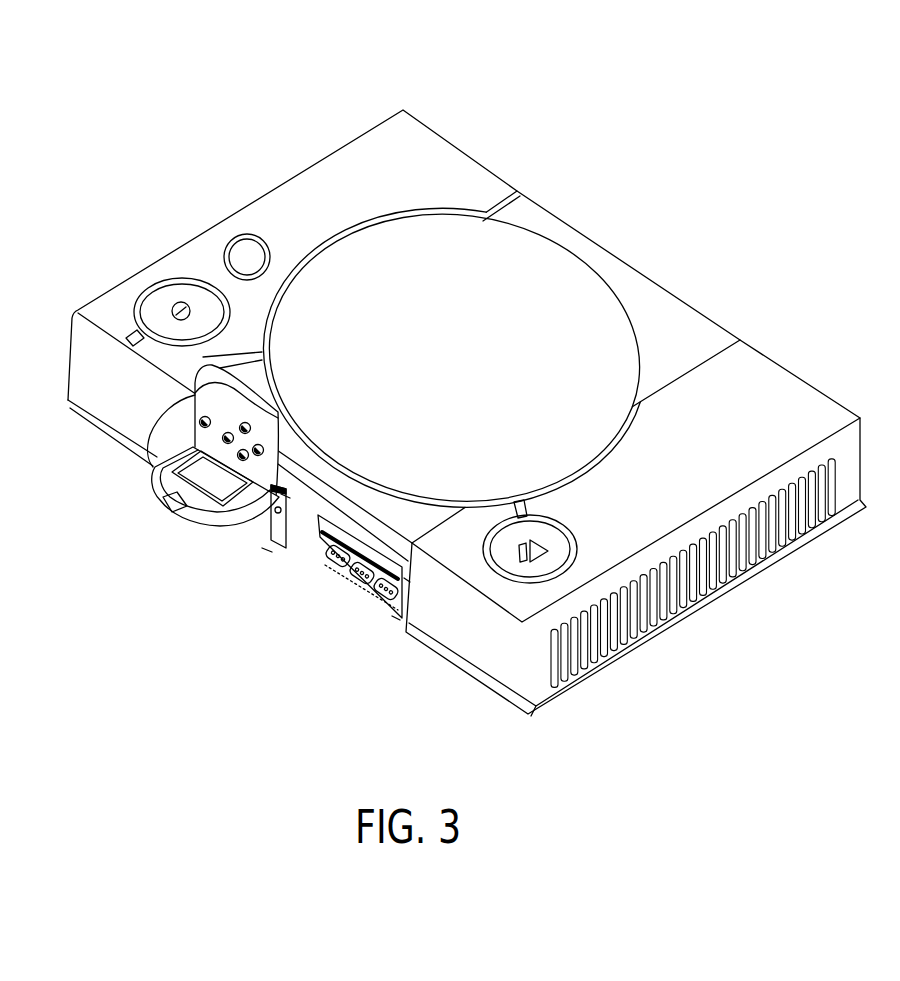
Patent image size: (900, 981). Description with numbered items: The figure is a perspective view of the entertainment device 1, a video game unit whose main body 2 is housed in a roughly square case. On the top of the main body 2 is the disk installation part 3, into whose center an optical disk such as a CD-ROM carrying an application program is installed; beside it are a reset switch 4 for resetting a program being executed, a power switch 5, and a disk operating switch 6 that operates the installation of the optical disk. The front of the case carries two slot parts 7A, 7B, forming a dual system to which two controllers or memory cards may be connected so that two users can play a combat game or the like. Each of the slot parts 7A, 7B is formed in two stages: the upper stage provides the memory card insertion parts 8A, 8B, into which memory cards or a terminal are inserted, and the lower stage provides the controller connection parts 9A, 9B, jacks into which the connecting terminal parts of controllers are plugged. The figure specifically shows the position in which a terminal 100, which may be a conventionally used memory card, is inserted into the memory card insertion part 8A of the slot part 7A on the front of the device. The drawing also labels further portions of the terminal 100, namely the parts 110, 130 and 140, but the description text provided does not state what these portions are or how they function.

The entertainment device 1 is at (688, 224).
The main body 2 is at (800, 393).
The disk installation part 3 is at (535, 247).
The reset switch 4 is at (247, 250).
The power switch 5 is at (150, 300).
The disk operating switch 6 is at (563, 557).
The slot part 7A is at (273, 492).
The slot part 7B is at (347, 599).
The memory card insertion part 8A is at (284, 497).
The memory card insertion part 8B is at (406, 578).
The controller connection part 9A is at (268, 542).
The controller connection part 9B is at (396, 620).
The terminal 100 is at (142, 486).
The cable 110 is at (125, 448).
The window portion 130 is at (220, 497).
The hood 140 is at (170, 518).